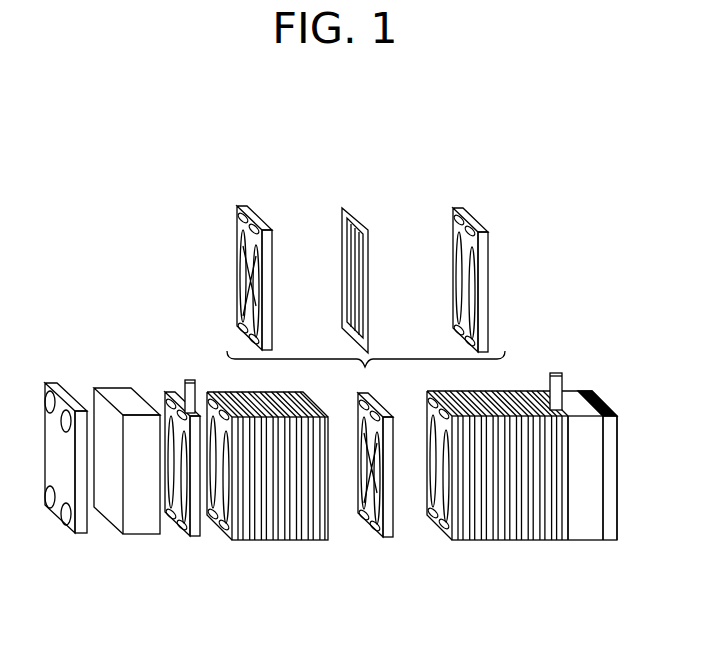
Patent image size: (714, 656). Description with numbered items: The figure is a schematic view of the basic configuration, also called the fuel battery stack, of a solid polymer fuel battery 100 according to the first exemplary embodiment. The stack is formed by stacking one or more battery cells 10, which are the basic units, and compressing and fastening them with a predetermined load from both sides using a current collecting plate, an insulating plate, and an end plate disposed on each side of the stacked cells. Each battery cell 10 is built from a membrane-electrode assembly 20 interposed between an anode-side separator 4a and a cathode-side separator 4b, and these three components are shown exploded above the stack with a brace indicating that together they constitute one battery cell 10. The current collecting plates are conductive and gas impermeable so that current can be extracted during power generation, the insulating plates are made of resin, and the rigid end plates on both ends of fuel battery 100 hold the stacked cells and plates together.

The fuel battery 100 is at (137, 232).
The battery cell 10 is at (390, 528).
The anode-side separator 4a is at (252, 209).
The cathode-side separator 4b is at (463, 209).
The membrane-electrode assembly 20 is at (347, 209).